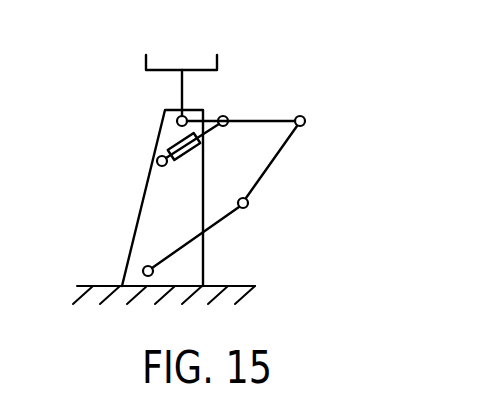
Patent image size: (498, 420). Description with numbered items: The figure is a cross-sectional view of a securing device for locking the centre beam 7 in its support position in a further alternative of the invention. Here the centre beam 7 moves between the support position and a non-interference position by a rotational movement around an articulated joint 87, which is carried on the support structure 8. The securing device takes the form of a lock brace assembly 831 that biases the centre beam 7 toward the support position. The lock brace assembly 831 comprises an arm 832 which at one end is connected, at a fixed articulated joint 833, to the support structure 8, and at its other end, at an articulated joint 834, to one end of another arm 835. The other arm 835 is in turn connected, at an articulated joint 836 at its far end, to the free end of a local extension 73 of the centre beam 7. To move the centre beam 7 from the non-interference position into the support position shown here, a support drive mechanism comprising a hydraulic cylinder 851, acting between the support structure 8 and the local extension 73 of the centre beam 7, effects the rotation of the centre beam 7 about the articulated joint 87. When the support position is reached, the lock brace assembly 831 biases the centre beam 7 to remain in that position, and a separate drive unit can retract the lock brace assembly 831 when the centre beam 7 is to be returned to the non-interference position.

The centre beam 7 is at (177, 70).
The support structure 8 is at (137, 217).
The local extension 73 is at (263, 119).
The articulated joint 87 is at (176, 118).
The lock brace assembly 831 is at (253, 197).
The arm 832 is at (218, 222).
The fixed articulated joint 833 is at (143, 270).
The articulated joint 834 is at (248, 205).
The other arm 835 is at (288, 138).
The articulated joint 836 is at (306, 120).
The hydraulic cylinder 851 is at (176, 142).